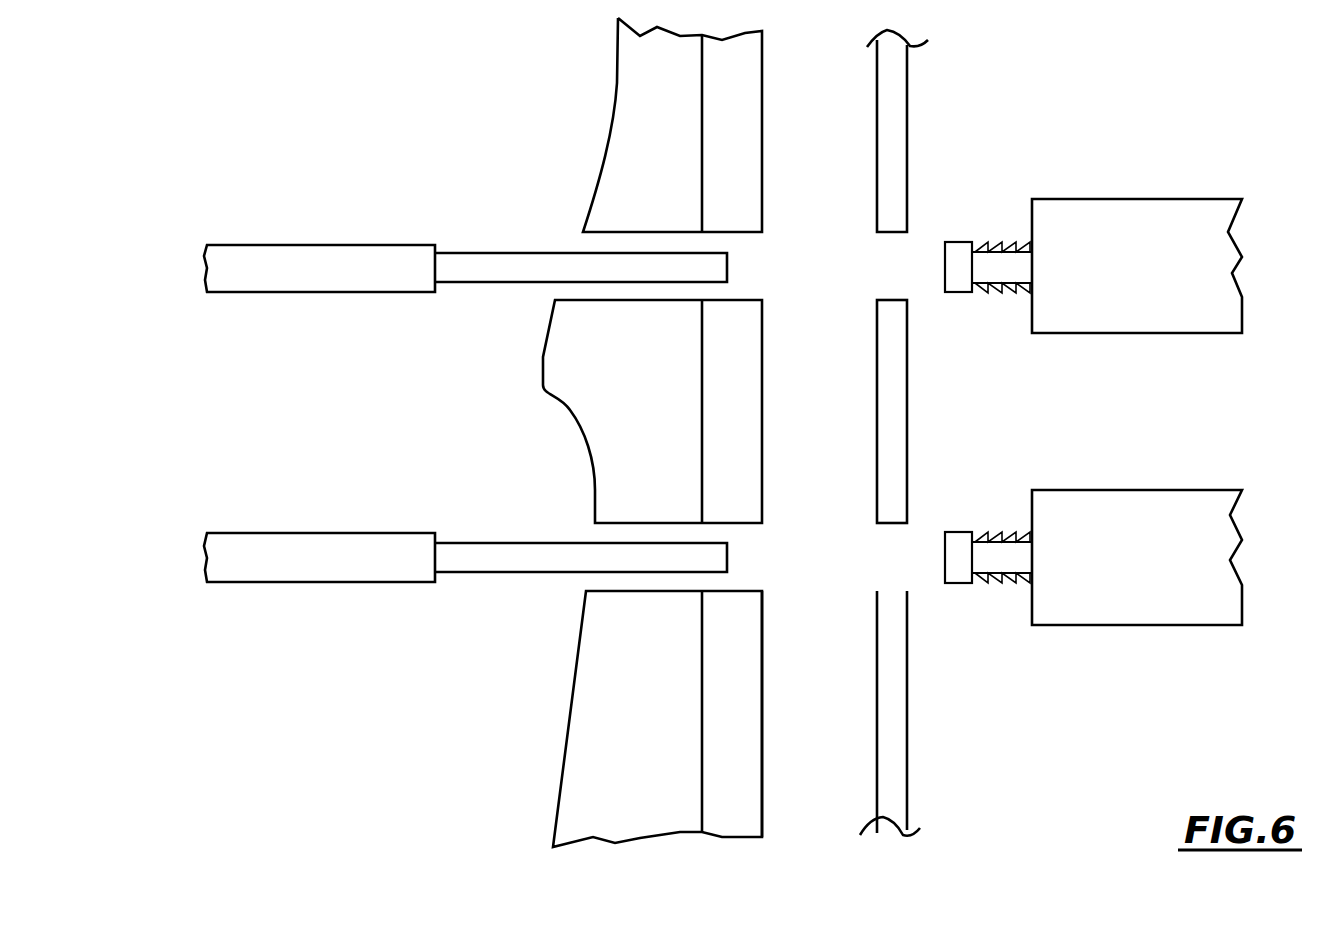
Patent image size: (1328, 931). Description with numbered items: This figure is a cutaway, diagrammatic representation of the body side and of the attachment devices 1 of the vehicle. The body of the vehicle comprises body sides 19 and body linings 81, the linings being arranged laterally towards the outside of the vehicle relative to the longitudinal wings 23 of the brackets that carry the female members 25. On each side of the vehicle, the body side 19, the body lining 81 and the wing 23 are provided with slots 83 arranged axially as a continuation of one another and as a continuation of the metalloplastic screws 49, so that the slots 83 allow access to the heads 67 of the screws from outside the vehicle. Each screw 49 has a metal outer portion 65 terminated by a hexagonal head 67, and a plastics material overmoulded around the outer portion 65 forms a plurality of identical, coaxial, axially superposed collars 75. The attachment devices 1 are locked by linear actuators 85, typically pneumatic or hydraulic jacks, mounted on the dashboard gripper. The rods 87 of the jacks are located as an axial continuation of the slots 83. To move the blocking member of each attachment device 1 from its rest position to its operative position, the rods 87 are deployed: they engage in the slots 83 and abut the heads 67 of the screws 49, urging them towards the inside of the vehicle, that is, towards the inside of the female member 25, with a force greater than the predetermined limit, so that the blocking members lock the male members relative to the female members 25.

The attachment device 1 is at (1165, 162).
The body side 19 is at (640, 797).
The longitudinal wing 23 is at (890, 770).
The female member 25 is at (1213, 199).
The metalloplastic screw 49 is at (1003, 399).
The outer portion 65 is at (1012, 268).
The hexagonal head 67 is at (955, 253).
The collars 75 is at (1005, 293).
The body lining 81 is at (730, 797).
The slots 83 is at (622, 592).
The linear actuators 85 is at (312, 547).
The rods 87 is at (505, 272).